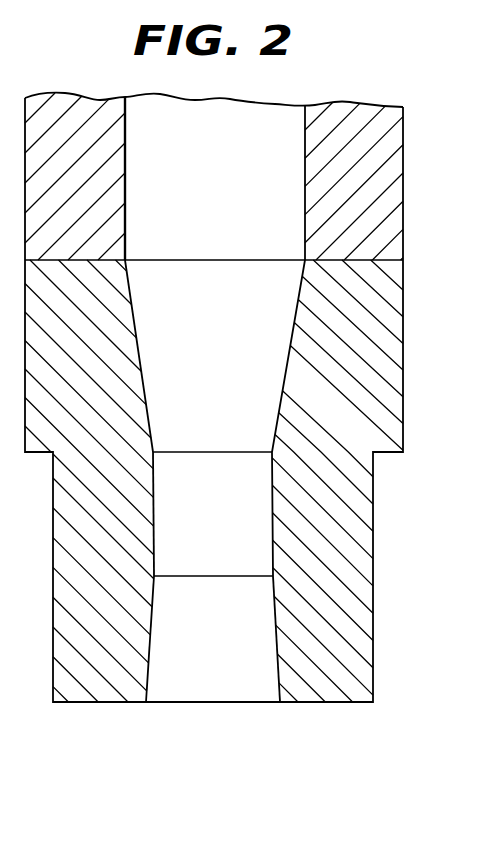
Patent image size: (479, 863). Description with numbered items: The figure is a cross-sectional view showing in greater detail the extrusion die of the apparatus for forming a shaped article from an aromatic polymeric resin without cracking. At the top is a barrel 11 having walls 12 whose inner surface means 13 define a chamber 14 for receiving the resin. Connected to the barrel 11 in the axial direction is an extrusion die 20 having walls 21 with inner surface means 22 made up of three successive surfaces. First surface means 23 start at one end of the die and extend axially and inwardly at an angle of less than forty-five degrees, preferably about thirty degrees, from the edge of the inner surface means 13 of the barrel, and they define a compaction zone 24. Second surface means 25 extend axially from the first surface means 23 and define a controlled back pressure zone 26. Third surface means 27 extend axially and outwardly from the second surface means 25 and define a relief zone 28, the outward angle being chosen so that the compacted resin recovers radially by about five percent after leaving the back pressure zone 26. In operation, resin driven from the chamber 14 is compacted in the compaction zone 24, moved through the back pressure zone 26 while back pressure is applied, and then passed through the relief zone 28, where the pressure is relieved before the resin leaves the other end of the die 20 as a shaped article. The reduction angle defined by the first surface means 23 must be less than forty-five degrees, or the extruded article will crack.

The barrel 11 is at (404, 133).
The walls 12 is at (388, 193).
The inner surface means 13 is at (305, 141).
The chamber 14 is at (222, 207).
The extrusion die 20 is at (405, 300).
The walls 21 is at (394, 403).
The inner surface means 22 is at (273, 550).
The first surface means 23 is at (134, 321).
The compaction zone 24 is at (225, 368).
The second surface means 25 is at (154, 512).
The controlled back pressure zone 26 is at (225, 532).
The third surface means 27 is at (150, 641).
The relief zone 28 is at (222, 645).